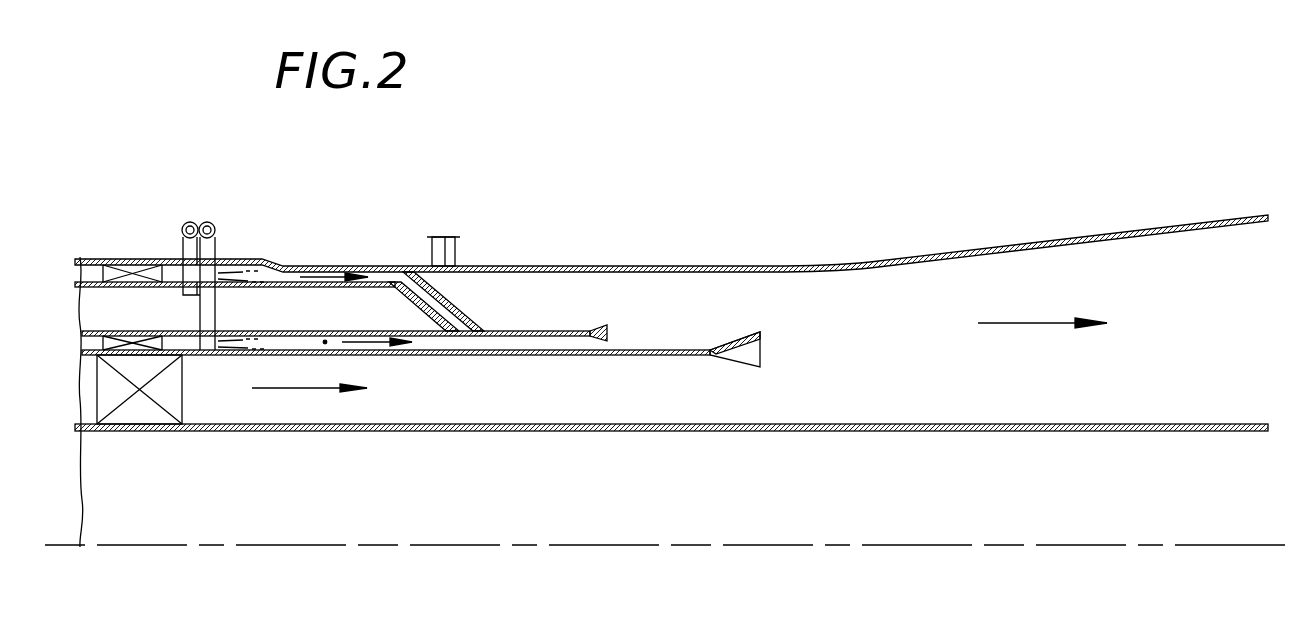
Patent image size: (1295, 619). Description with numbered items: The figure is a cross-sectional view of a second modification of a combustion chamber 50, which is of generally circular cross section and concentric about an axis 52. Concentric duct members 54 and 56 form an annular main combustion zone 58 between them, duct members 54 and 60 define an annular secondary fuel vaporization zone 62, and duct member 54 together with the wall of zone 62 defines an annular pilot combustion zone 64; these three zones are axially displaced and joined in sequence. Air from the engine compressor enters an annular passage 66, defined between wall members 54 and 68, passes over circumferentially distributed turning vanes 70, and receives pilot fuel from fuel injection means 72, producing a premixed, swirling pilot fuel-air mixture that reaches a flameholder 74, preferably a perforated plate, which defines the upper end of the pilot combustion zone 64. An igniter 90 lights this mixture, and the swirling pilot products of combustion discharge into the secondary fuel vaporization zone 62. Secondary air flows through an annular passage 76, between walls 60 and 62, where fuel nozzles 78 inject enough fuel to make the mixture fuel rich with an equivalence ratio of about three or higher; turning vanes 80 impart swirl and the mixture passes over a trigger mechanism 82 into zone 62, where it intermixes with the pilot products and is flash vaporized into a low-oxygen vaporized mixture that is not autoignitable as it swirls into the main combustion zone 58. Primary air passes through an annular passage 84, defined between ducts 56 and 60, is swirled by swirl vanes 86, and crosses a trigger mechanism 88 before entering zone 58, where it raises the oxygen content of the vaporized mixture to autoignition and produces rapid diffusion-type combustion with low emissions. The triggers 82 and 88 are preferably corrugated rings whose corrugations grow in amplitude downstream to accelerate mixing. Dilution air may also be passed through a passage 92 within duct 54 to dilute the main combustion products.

The combustion chamber 50 is at (985, 78).
The axis 52 is at (700, 545).
The duct member 54 is at (1028, 242).
The duct member 56 is at (863, 431).
The annular main combustion zone 58 is at (895, 354).
The duct member 60 is at (655, 357).
The annular secondary fuel vaporization zone 62 is at (530, 334).
The annular pilot combustion zone 64 is at (533, 312).
The annular passage 66 is at (292, 268).
The wall member 68 is at (288, 288).
The turning vanes 70 is at (130, 262).
The fuel injection means 72 is at (190, 276).
The flameholder 74 is at (433, 290).
The annular passage 76 is at (325, 342).
The fuel nozzles 78 is at (208, 358).
The turning vanes 80 is at (117, 330).
The trigger mechanism 82 is at (604, 327).
The annular passage 84 is at (420, 403).
The swirl vanes 86 is at (153, 413).
The trigger mechanism 88 is at (762, 344).
The igniter 90 is at (460, 237).
The passage 92 is at (422, 490).